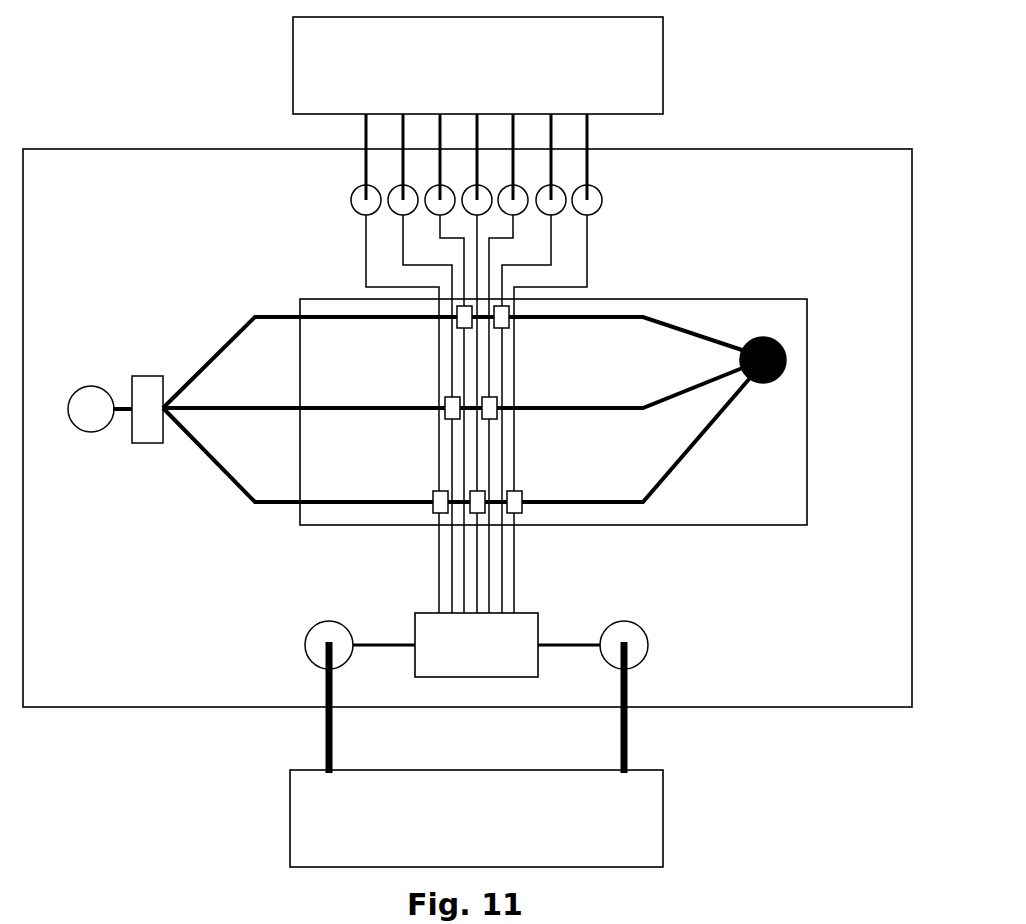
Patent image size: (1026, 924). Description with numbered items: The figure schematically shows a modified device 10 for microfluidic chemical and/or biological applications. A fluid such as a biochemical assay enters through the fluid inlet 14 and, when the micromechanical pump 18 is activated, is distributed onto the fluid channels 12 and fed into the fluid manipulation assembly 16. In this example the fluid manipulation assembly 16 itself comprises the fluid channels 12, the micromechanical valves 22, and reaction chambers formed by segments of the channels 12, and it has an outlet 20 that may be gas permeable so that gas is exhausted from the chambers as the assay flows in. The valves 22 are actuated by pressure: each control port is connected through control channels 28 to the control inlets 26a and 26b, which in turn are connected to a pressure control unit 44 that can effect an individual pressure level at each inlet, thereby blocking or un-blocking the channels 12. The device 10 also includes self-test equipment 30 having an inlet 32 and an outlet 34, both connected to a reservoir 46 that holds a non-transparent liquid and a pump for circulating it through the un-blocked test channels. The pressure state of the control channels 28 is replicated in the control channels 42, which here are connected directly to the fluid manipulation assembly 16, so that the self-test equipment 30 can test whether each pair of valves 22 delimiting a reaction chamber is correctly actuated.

The device 10 is at (745, 62).
The fluid channels 12 is at (217, 533).
The fluid inlet 14 is at (97, 433).
The fluid manipulation assembly 16 is at (553, 412).
The micromechanical pump 18 is at (140, 376).
The outlet 20 is at (773, 336).
The micromechanical valves 22 is at (398, 552).
The control inlet 26a is at (351, 196).
The control inlet 26b is at (602, 198).
The control channels 28 is at (323, 263).
The self-test equipment 30 is at (476, 645).
The inlet 32 is at (308, 662).
The outlet 34 is at (643, 663).
The control channels 42 is at (552, 567).
The pressure control unit 44 is at (478, 65).
The reservoir 46 is at (476, 818).